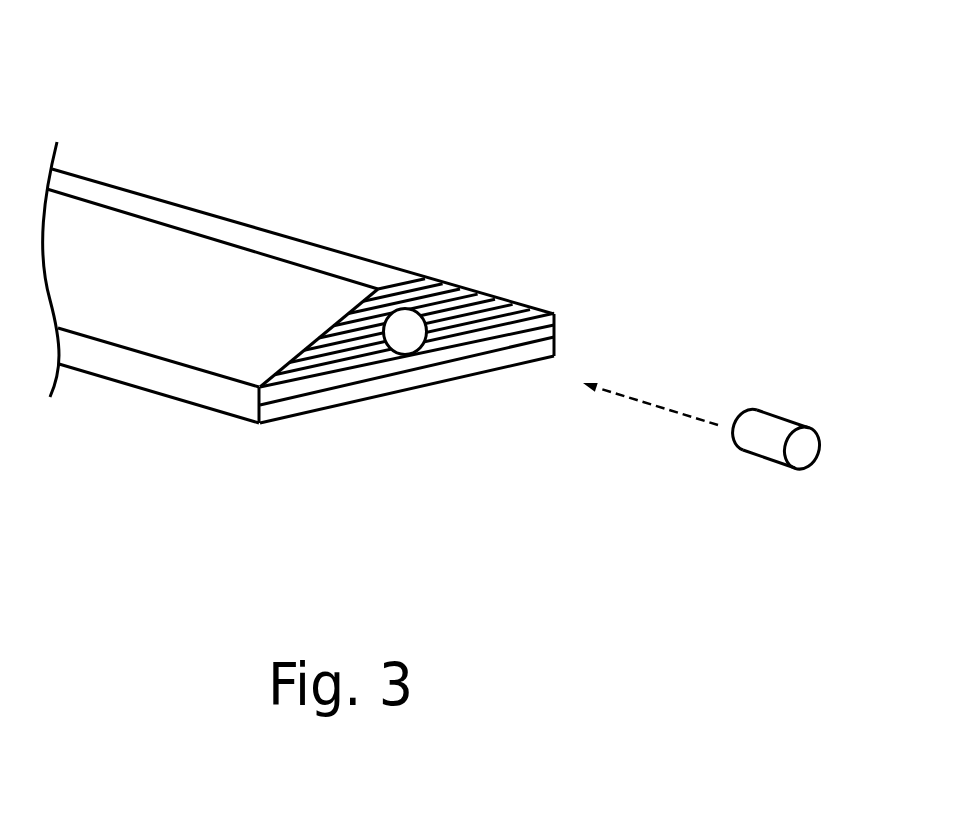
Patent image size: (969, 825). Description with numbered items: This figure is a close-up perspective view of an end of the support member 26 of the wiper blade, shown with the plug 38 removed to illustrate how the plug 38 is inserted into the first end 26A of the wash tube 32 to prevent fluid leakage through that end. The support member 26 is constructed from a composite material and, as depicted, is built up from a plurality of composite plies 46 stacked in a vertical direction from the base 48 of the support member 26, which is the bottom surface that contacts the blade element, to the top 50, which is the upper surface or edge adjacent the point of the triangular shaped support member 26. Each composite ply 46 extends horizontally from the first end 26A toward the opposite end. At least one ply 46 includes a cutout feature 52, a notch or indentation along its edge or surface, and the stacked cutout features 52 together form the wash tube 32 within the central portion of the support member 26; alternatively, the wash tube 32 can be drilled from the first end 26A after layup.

The support member 26 is at (328, 253).
The first end 26A is at (436, 289).
The top 50 is at (257, 238).
The base 48 is at (462, 378).
The composite plies 46 is at (493, 308).
The wash tube 32 is at (402, 325).
The cutout feature 52 is at (388, 347).
The plug 38 is at (770, 430).